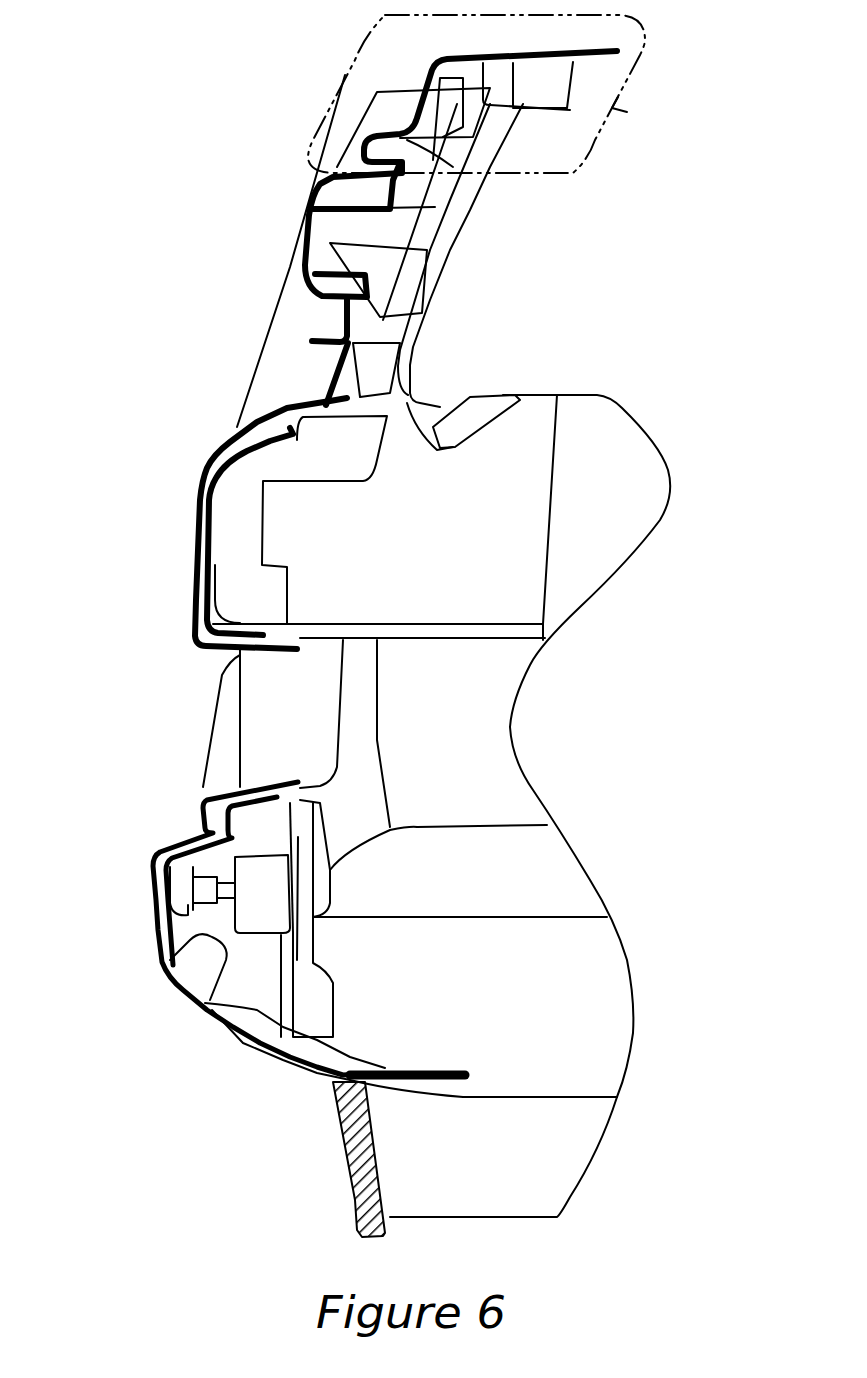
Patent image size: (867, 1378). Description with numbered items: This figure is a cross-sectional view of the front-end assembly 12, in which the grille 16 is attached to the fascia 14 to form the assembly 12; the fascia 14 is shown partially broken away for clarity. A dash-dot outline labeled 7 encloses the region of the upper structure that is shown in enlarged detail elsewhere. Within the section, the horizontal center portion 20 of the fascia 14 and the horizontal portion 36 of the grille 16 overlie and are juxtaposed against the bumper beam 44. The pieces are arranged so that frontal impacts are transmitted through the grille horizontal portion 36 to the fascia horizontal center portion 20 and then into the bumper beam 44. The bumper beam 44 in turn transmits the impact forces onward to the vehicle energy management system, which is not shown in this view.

The detail region of FIG. 7 is at (635, 118).
The assembly 12 is at (295, 510).
The fascia 14 is at (250, 1030).
The grille 16 is at (313, 207).
The horizontal center portion 20 is at (208, 612).
The horizontal portion 36 is at (193, 577).
The bumper beam 44 is at (240, 518).